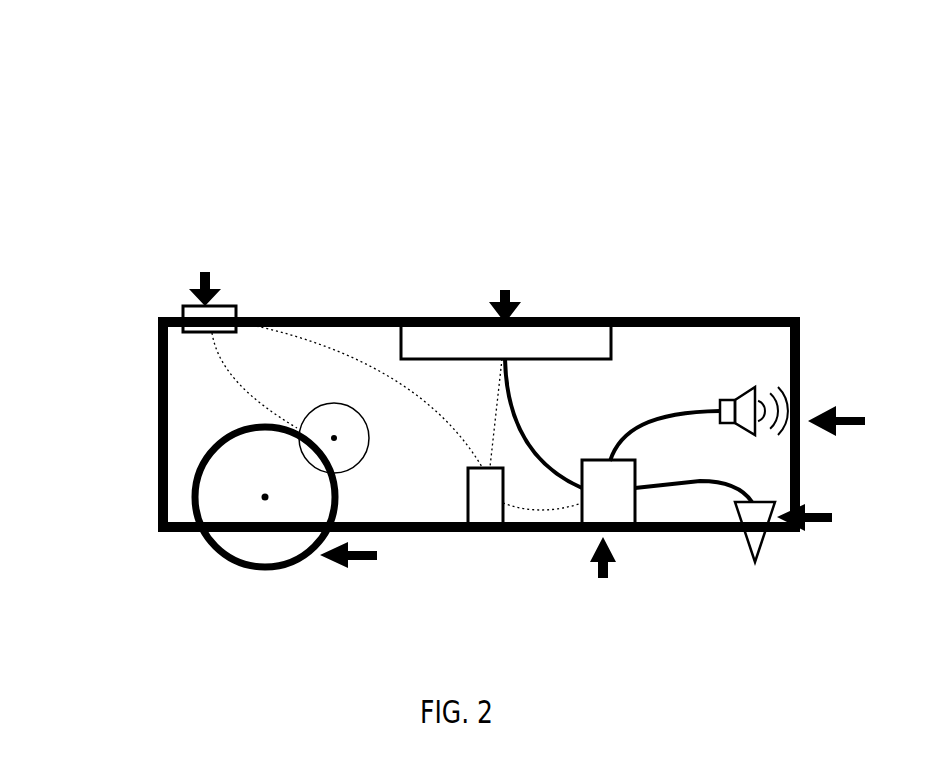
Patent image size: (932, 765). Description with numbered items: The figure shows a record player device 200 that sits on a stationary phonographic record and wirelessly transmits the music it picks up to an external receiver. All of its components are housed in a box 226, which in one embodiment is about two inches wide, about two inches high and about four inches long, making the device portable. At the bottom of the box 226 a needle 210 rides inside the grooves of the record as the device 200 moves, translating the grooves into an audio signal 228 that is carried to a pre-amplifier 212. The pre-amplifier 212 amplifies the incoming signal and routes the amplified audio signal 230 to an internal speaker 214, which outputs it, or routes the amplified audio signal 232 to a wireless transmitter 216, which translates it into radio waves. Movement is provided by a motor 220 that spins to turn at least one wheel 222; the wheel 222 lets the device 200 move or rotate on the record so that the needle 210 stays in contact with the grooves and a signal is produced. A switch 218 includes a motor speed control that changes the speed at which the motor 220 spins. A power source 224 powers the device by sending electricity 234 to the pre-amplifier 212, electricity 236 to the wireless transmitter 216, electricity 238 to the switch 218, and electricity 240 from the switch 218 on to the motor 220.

The record player device 200 is at (213, 83).
The needle 210 is at (903, 557).
The pre-amplifier 212 is at (617, 555).
The speaker 214 is at (903, 432).
The wireless transmitter 216 is at (505, 293).
The switch 218 is at (210, 273).
The motor 220 is at (313, 418).
The wheel 222 is at (350, 563).
The power source 224 is at (517, 530).
The box 226 is at (847, 263).
The audio signal 228 is at (678, 488).
The amplified audio signal 230 is at (647, 418).
The amplified audio signal 232 is at (562, 462).
The electricity 234 is at (535, 508).
The electricity 236 is at (498, 422).
The electricity 238 is at (228, 372).
The electricity 240 is at (292, 338).